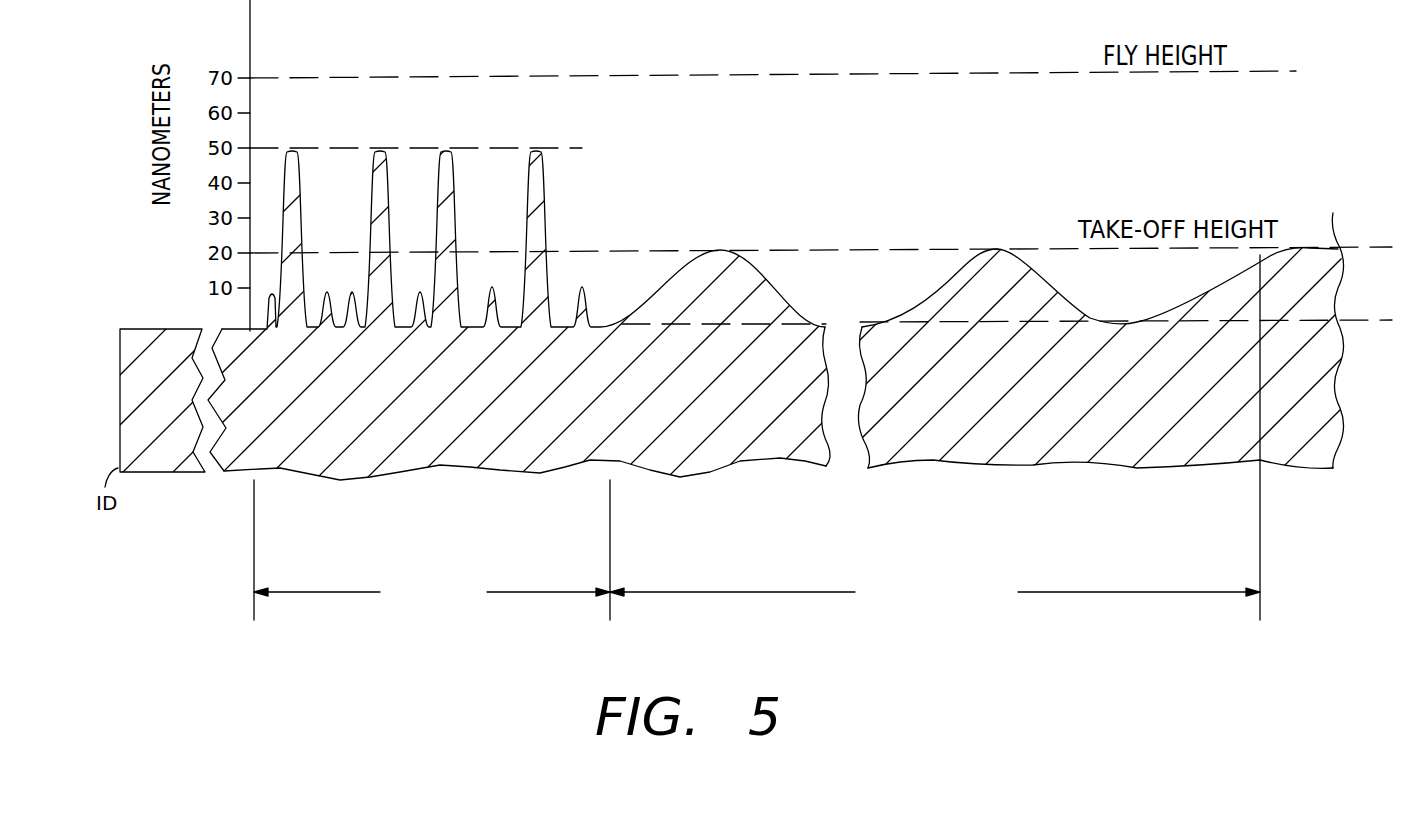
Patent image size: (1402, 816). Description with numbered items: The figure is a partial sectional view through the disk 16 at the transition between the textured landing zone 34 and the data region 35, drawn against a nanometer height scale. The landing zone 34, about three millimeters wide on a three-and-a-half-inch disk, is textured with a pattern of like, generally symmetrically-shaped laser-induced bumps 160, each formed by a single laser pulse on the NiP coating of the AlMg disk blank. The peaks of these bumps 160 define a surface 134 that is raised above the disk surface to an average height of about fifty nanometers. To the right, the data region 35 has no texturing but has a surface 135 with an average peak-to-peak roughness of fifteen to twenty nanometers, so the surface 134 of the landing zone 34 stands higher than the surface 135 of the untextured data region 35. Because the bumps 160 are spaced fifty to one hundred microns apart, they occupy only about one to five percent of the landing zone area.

The disk 16 is at (1303, 455).
The landing zone 34 is at (436, 667).
The data region 35 is at (946, 639).
The surface of the landing zone 134 is at (580, 148).
The surface of the data region 135 is at (750, 262).
The laser-induced bumps 160 is at (533, 148).